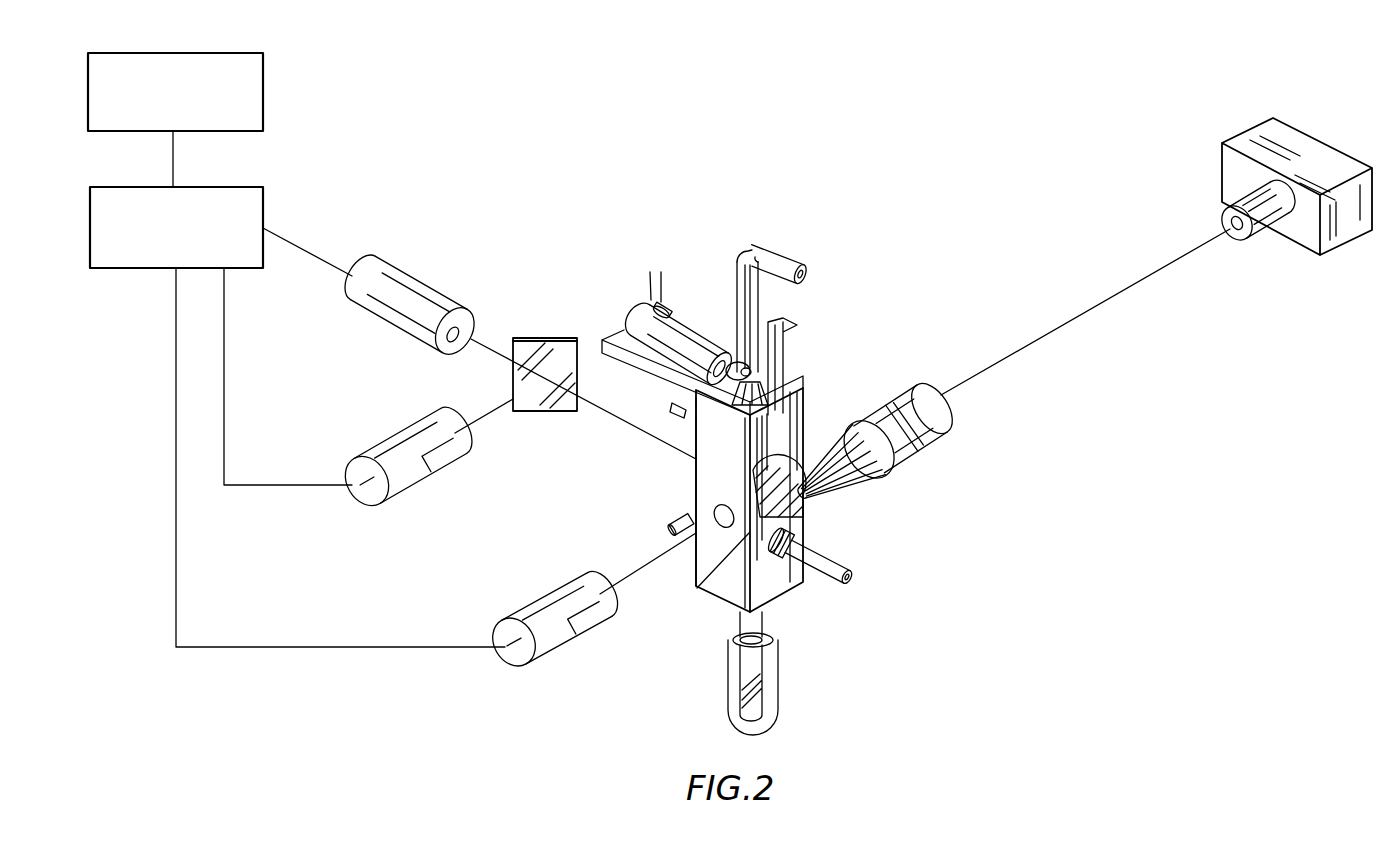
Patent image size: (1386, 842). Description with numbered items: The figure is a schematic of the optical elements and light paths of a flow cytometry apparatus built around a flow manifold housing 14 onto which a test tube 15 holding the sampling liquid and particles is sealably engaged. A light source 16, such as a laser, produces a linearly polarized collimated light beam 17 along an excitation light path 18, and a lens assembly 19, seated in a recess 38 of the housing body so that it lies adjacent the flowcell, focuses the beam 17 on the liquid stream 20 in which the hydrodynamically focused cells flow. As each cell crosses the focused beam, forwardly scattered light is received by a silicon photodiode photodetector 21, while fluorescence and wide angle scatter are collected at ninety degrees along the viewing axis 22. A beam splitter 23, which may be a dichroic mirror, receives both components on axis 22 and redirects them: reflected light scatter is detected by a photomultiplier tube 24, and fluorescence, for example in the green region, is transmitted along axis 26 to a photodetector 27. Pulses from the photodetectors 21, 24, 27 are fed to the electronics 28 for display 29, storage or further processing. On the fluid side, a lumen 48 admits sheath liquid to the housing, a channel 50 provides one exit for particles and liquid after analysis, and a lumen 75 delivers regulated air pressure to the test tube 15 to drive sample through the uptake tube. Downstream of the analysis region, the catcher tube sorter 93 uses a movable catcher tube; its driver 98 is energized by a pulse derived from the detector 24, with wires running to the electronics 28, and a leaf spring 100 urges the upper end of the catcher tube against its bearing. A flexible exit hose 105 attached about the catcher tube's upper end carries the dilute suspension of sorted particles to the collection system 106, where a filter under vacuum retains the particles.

The housing 14 is at (720, 604).
The test tube 15 is at (728, 682).
The light source 16 is at (1318, 150).
The light beam 17 is at (1128, 288).
The excitation light path 18 is at (694, 588).
The lens assembly 19 is at (945, 440).
The liquid stream 20 is at (803, 460).
The photodetector 21 is at (572, 648).
The axis 22 is at (672, 450).
The beam splitter 23 is at (520, 338).
The photomultiplier tube 24 is at (425, 480).
The axis 26 is at (478, 356).
The photodetector 27 is at (362, 298).
The electronics 28 is at (263, 196).
The display 29 is at (263, 78).
The recess 38 is at (797, 500).
The lumen 48 is at (672, 526).
The channel 50 is at (672, 406).
The lumen 75 is at (848, 578).
The catcher tube sorter 93 is at (712, 272).
The driver 98 is at (633, 316).
The leaf spring 100 is at (785, 355).
The flexible exit hose 105 is at (770, 250).
The collection system 106 is at (806, 279).